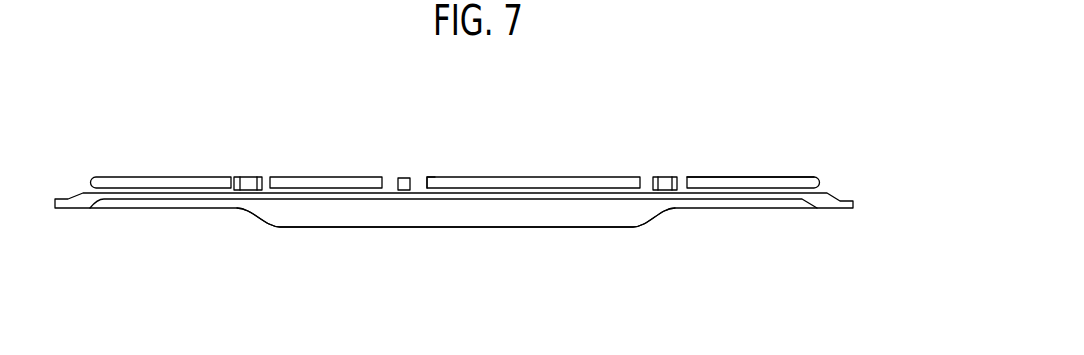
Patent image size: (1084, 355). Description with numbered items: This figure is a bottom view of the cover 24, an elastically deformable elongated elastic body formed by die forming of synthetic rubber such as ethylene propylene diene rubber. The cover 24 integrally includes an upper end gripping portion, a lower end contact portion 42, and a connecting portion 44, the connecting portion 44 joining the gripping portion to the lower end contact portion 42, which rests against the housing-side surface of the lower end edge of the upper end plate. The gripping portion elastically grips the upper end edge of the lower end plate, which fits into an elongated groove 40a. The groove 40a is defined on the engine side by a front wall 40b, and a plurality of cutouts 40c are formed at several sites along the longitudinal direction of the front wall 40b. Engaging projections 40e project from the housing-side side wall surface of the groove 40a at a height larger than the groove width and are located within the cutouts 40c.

The cover 24 is at (859, 104).
The groove 40a is at (810, 178).
The front wall 40b is at (542, 186).
The cutouts 40c is at (423, 184).
The engaging projections 40e is at (247, 186).
The lower end contact portion 42 is at (752, 170).
The connecting portion 44 is at (665, 231).